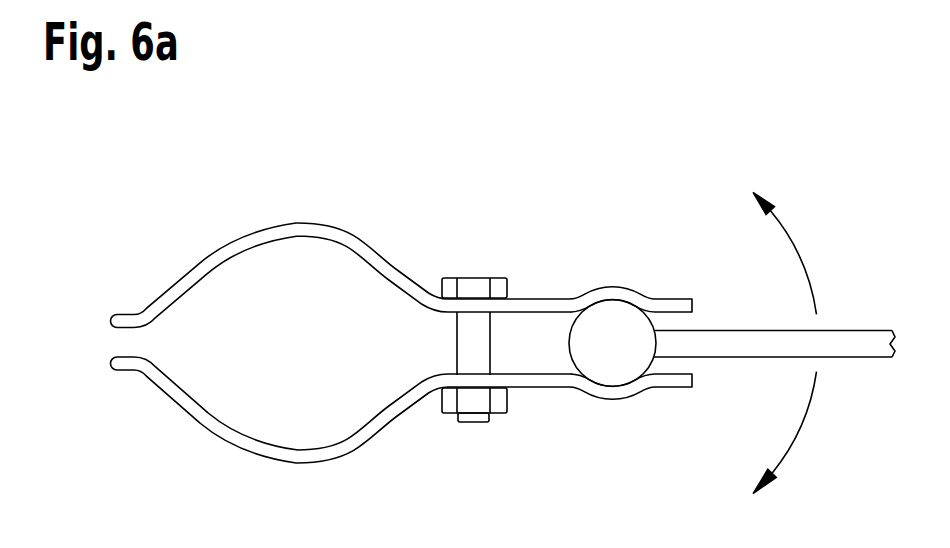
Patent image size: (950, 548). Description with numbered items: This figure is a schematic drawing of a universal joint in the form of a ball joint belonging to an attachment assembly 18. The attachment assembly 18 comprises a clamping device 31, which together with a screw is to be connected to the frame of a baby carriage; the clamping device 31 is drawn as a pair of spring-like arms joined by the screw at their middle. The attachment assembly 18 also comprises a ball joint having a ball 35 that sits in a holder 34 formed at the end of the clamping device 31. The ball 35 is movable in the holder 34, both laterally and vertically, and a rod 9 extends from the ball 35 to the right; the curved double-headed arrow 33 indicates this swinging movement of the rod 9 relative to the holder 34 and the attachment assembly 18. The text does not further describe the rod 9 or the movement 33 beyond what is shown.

The rod 9 is at (606, 152).
The attachment assembly 18 is at (404, 285).
The clamping device 31 is at (219, 262).
The pivoting movement 33 is at (691, 208).
The holder 34 is at (613, 397).
The ball 35 is at (610, 330).